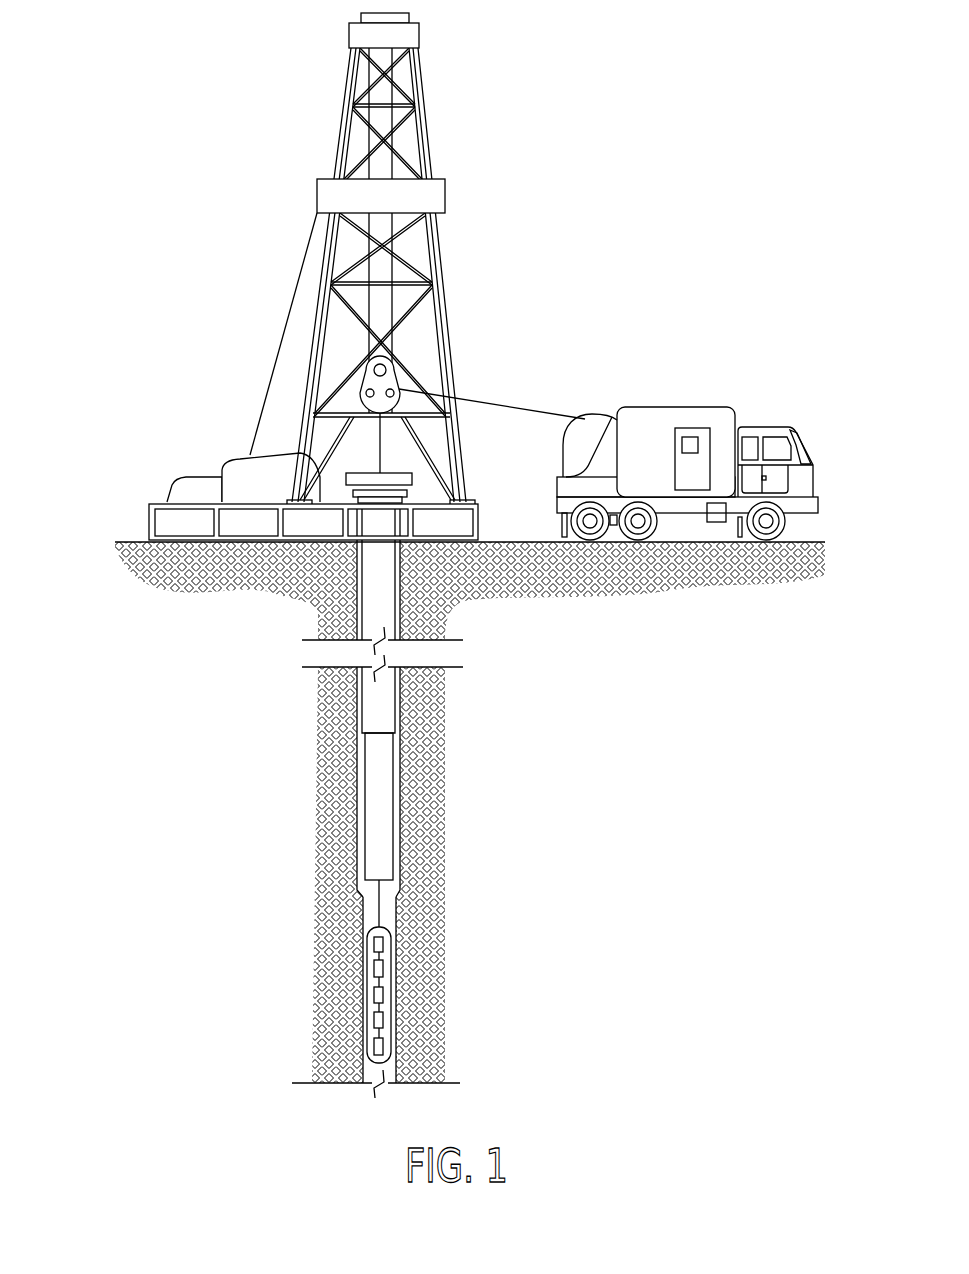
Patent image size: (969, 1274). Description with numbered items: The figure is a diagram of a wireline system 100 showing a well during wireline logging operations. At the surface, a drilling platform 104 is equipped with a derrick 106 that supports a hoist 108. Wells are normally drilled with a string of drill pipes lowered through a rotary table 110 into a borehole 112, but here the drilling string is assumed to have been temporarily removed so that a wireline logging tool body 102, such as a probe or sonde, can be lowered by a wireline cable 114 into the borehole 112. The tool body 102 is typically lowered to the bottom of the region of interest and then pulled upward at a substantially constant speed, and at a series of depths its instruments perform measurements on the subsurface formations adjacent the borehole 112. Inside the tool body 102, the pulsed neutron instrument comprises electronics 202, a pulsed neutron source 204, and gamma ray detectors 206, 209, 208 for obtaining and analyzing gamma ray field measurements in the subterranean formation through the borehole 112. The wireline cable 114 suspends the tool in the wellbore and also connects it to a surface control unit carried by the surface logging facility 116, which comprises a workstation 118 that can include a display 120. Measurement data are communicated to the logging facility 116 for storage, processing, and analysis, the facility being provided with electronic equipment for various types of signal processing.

The wireline system 100 is at (636, 201).
The wireline logging tool body 102 is at (434, 965).
The drilling platform 104 is at (480, 531).
The derrick 106 is at (465, 494).
The hoist 108 is at (393, 370).
The rotary table 110 is at (410, 473).
The borehole 112 is at (362, 902).
The wireline cable 114 is at (493, 400).
The surface logging facility 116 is at (687, 444).
The workstation 118 is at (675, 472).
The display 120 is at (690, 435).
The electronics 202 is at (383, 943).
The pulsed neutron source 204 is at (383, 968).
The gamma ray detector 206 is at (383, 994).
The gamma ray detector 209 is at (383, 1019).
The gamma ray detector 208 is at (383, 1046).